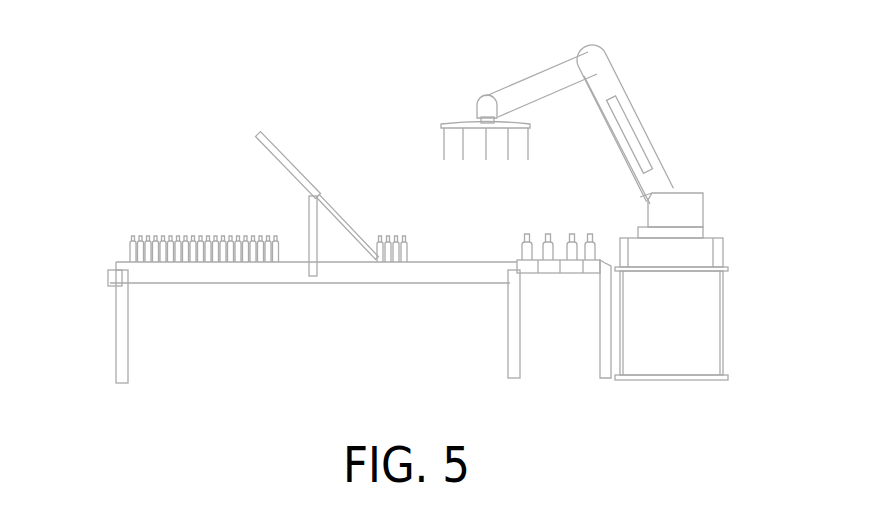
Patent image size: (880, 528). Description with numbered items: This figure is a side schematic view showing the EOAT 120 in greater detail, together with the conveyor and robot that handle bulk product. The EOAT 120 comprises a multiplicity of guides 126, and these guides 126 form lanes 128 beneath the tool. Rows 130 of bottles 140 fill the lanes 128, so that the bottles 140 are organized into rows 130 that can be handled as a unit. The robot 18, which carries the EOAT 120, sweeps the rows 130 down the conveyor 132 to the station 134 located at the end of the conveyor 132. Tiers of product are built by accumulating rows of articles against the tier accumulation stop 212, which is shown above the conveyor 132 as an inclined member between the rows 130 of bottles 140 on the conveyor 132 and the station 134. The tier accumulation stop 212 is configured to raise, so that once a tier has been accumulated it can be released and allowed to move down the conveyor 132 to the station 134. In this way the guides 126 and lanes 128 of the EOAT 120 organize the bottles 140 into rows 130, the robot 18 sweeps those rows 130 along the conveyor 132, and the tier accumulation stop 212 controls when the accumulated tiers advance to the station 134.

The robot 18 is at (723, 295).
The EOAT 120 is at (562, 199).
The guides 126 is at (442, 150).
The lanes 128 is at (452, 153).
The rows 130 is at (590, 252).
The conveyor 132 is at (363, 270).
The station 134 is at (200, 273).
The bottles 140 is at (176, 233).
The tier accumulation stop 212 is at (264, 150).